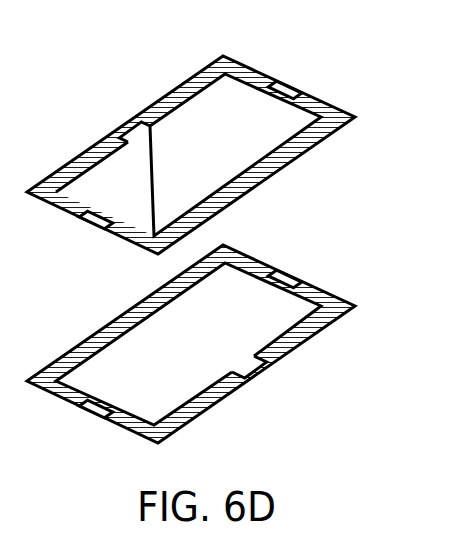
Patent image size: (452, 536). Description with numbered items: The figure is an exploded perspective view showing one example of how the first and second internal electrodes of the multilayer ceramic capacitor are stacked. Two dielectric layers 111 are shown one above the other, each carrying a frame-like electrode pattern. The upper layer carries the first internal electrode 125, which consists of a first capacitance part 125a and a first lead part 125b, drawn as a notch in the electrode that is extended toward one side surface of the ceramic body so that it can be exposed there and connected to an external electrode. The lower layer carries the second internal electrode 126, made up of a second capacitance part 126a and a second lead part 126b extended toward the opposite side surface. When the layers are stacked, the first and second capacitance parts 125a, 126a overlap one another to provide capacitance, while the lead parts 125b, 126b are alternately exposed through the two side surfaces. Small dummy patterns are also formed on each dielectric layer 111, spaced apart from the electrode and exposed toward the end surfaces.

The dielectric layer 111 is at (180, 97).
The first internal electrode 125 is at (184, 143).
The first capacitance part 125a is at (86, 187).
The first lead part 125b is at (131, 130).
The second internal electrode 126 is at (220, 335).
The second capacitance part 126a is at (266, 337).
The second lead part 126b is at (245, 372).